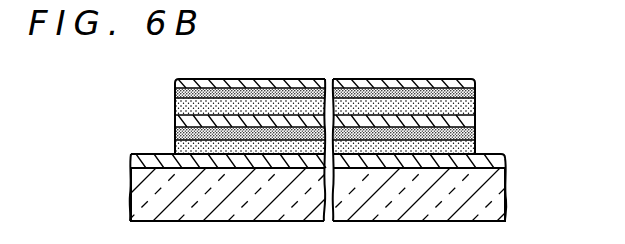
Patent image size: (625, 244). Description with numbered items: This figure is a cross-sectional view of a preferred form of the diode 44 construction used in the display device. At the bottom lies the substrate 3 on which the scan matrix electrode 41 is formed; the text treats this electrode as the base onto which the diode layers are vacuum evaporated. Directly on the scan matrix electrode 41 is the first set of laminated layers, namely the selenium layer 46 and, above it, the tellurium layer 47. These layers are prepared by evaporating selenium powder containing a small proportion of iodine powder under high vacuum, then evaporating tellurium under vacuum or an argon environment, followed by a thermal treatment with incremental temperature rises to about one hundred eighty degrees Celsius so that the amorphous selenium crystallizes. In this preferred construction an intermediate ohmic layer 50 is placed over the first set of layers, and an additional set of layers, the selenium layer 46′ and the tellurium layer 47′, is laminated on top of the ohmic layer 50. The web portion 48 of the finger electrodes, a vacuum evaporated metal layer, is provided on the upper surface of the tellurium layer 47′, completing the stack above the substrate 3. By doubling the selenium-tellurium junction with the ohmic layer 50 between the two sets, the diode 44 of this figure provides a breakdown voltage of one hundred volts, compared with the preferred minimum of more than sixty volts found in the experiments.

The substrate 3 is at (506, 186).
The scan matrix electrode 41 is at (131, 162).
The diode 44 is at (348, 68).
The metal layer 48 is at (177, 84).
The tellurium layer 47′ is at (477, 93).
The selenium layer 46′ is at (478, 103).
The intermediate ohmic layer 50 is at (175, 123).
The tellurium layer 47 is at (478, 132).
The selenium layer 46 is at (478, 140).